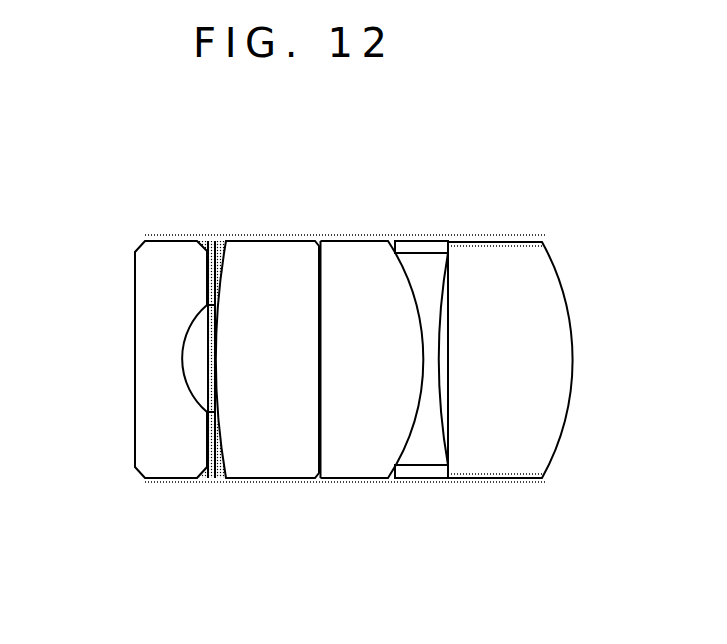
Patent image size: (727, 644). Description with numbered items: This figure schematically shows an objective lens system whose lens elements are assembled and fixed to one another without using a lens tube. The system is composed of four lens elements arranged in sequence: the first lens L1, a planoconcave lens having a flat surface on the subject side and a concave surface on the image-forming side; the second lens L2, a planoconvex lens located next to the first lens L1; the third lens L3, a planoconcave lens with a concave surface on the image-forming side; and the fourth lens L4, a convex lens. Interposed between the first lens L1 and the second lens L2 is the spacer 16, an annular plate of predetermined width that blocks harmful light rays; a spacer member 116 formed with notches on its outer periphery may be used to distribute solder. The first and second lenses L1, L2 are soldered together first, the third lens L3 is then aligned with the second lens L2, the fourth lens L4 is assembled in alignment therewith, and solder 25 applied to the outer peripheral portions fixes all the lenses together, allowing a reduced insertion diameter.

The first lens L1 is at (177, 453).
The second lens L2 is at (267, 258).
The third lens L3 is at (360, 462).
The fourth lens L4 is at (514, 457).
The spacer 16 is at (212, 270).
The solder 25 is at (318, 240).
The spacer member 116 is at (428, 246).